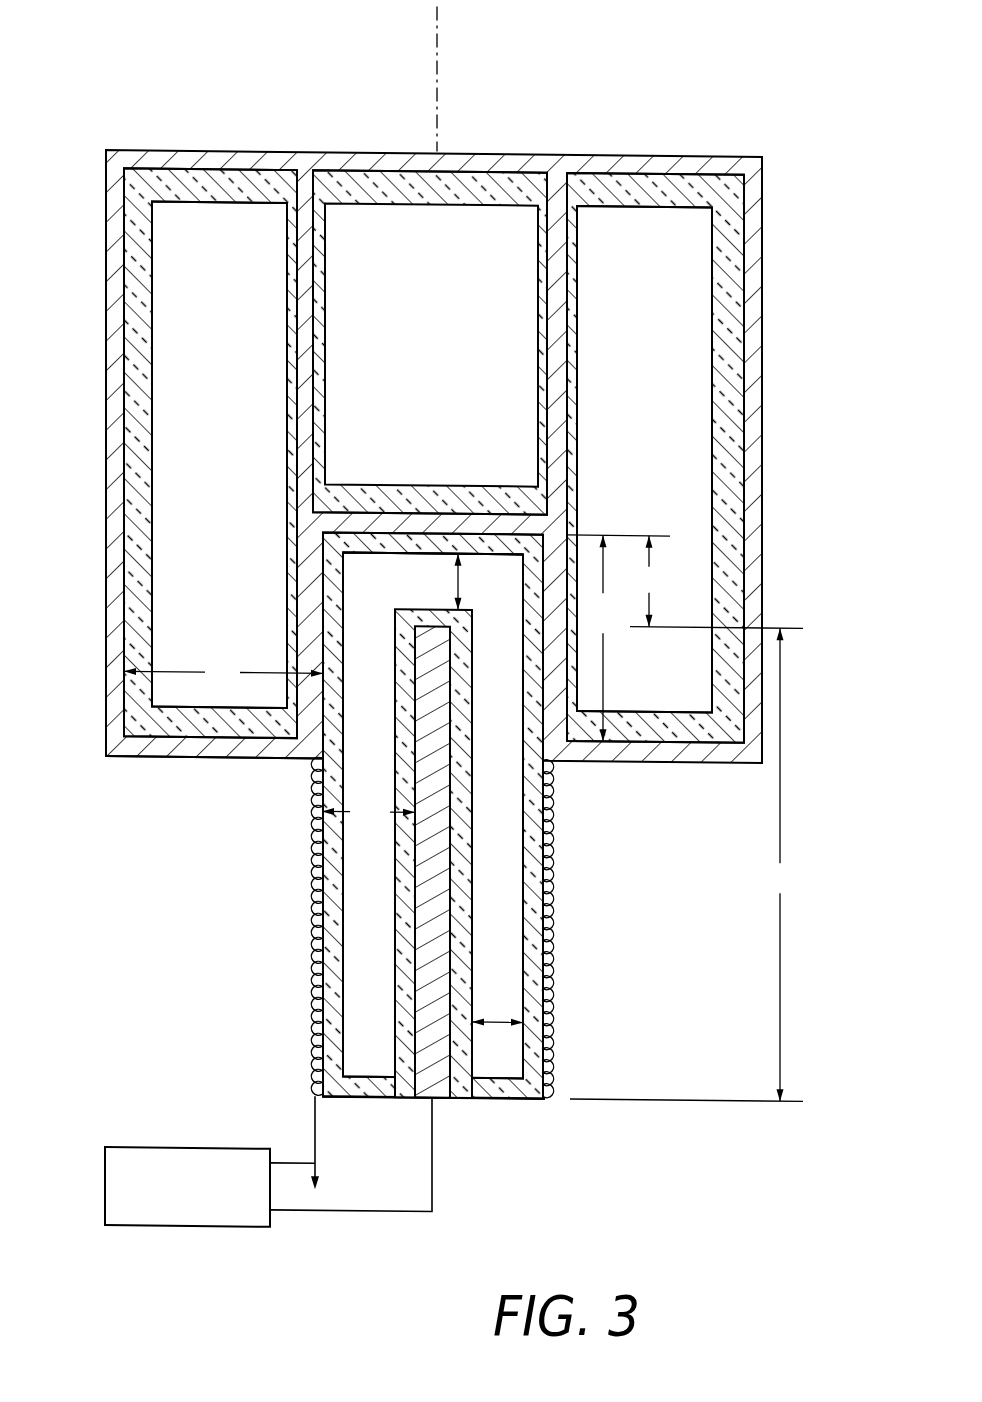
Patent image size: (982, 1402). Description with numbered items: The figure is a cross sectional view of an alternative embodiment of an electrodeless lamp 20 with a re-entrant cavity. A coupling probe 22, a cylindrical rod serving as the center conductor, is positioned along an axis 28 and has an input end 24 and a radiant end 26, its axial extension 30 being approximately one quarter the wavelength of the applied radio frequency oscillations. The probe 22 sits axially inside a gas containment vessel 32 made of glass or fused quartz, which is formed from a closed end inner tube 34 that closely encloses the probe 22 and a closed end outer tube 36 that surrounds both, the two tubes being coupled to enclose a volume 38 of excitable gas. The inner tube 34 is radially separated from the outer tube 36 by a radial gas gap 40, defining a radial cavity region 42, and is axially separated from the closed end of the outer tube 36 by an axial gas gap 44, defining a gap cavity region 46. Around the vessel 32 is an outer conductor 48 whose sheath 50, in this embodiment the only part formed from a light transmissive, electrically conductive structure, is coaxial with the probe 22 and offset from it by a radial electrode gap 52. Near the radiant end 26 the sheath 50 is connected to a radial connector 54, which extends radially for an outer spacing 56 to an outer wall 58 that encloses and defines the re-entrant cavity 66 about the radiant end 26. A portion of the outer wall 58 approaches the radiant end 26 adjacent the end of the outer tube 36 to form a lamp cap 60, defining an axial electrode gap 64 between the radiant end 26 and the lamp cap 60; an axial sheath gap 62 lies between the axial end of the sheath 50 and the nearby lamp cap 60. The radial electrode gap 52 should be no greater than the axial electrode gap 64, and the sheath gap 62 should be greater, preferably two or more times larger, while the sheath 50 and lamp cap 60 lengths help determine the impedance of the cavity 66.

The electrodeless lamp 20 is at (92, 78).
The coupling probe 22 is at (437, 1100).
The input end 24 is at (472, 1070).
The radiant end 26 is at (503, 872).
The axis 28 is at (478, 80).
The axial extension 30 is at (686, 863).
The gas containment vessel 32 is at (553, 795).
The closed end inner tube 34 is at (472, 940).
The closed end outer tube 36 is at (553, 1030).
The volume of gas 38 is at (512, 698).
The radial gas gap 40 is at (497, 1004).
The radial cavity region 42 is at (512, 896).
The axial gas gap 44 is at (460, 578).
The gap cavity region 46 is at (400, 593).
The outer conductor 48 is at (107, 440).
The sheath 50 is at (432, 815).
The radial electrode gap 52 is at (368, 812).
The radial connector 54 is at (172, 757).
The outer spacing 56 is at (223, 673).
The outer wall 58 is at (106, 617).
The lamp cap 60 is at (398, 509).
The axial sheath gap 62 is at (618, 638).
The axial electrode gap 64 is at (716, 582).
The re-entrant cavity 66 is at (232, 507).